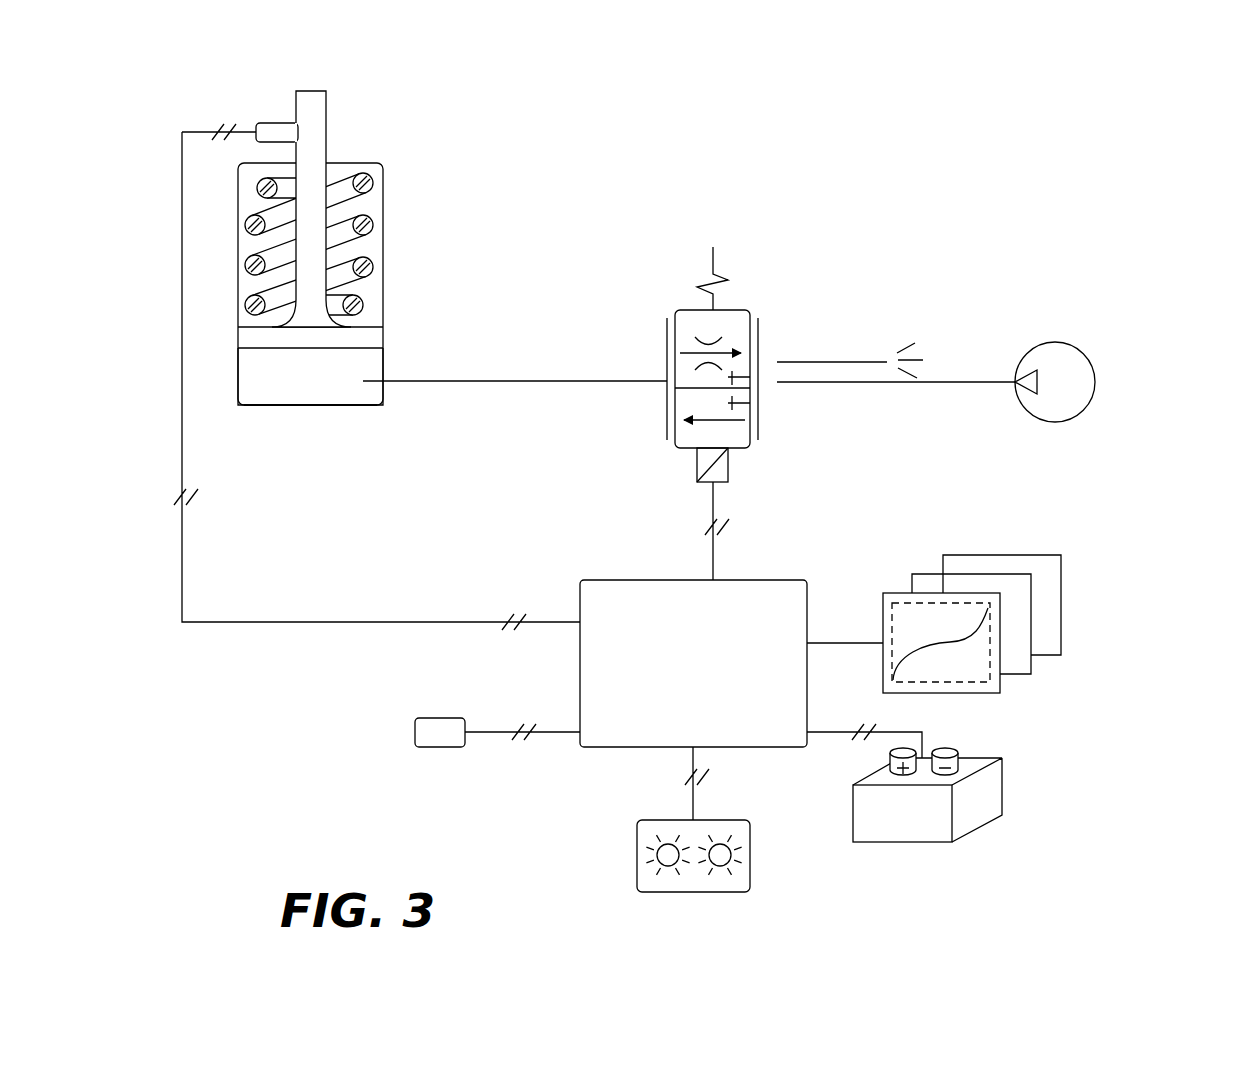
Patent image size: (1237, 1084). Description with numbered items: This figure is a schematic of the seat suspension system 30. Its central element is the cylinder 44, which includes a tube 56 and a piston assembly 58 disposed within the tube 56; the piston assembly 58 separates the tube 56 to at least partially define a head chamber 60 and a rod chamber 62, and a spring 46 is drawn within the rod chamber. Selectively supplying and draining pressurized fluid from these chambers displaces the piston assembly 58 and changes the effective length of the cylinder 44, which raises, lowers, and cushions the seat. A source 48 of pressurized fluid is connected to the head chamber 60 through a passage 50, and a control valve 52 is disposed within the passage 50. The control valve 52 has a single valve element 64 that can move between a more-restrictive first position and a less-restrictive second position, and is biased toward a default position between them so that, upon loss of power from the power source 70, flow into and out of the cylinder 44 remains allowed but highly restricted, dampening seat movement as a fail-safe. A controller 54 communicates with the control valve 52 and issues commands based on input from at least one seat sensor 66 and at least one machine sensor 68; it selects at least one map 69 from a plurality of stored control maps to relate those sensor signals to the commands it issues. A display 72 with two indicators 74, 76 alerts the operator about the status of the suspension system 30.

The suspension system 30 is at (1146, 318).
The cylinder 44 is at (321, 265).
The spring 46 is at (388, 178).
The source of pressurized fluid 48 is at (1050, 395).
The passage 50 is at (522, 380).
The control valve 52 is at (781, 304).
The controller 54 is at (680, 676).
The tube 56 is at (383, 400).
The piston assembly 58 is at (383, 332).
The head chamber 60 is at (300, 390).
The rod chamber 62 is at (383, 248).
The valve element 64 is at (743, 450).
The seat sensor 66 is at (270, 128).
The machine sensor 68 is at (440, 750).
The map 69 is at (1061, 600).
The power source 70 is at (890, 823).
The display 72 is at (700, 881).
The indicator 74 is at (658, 879).
The indicator 76 is at (706, 879).